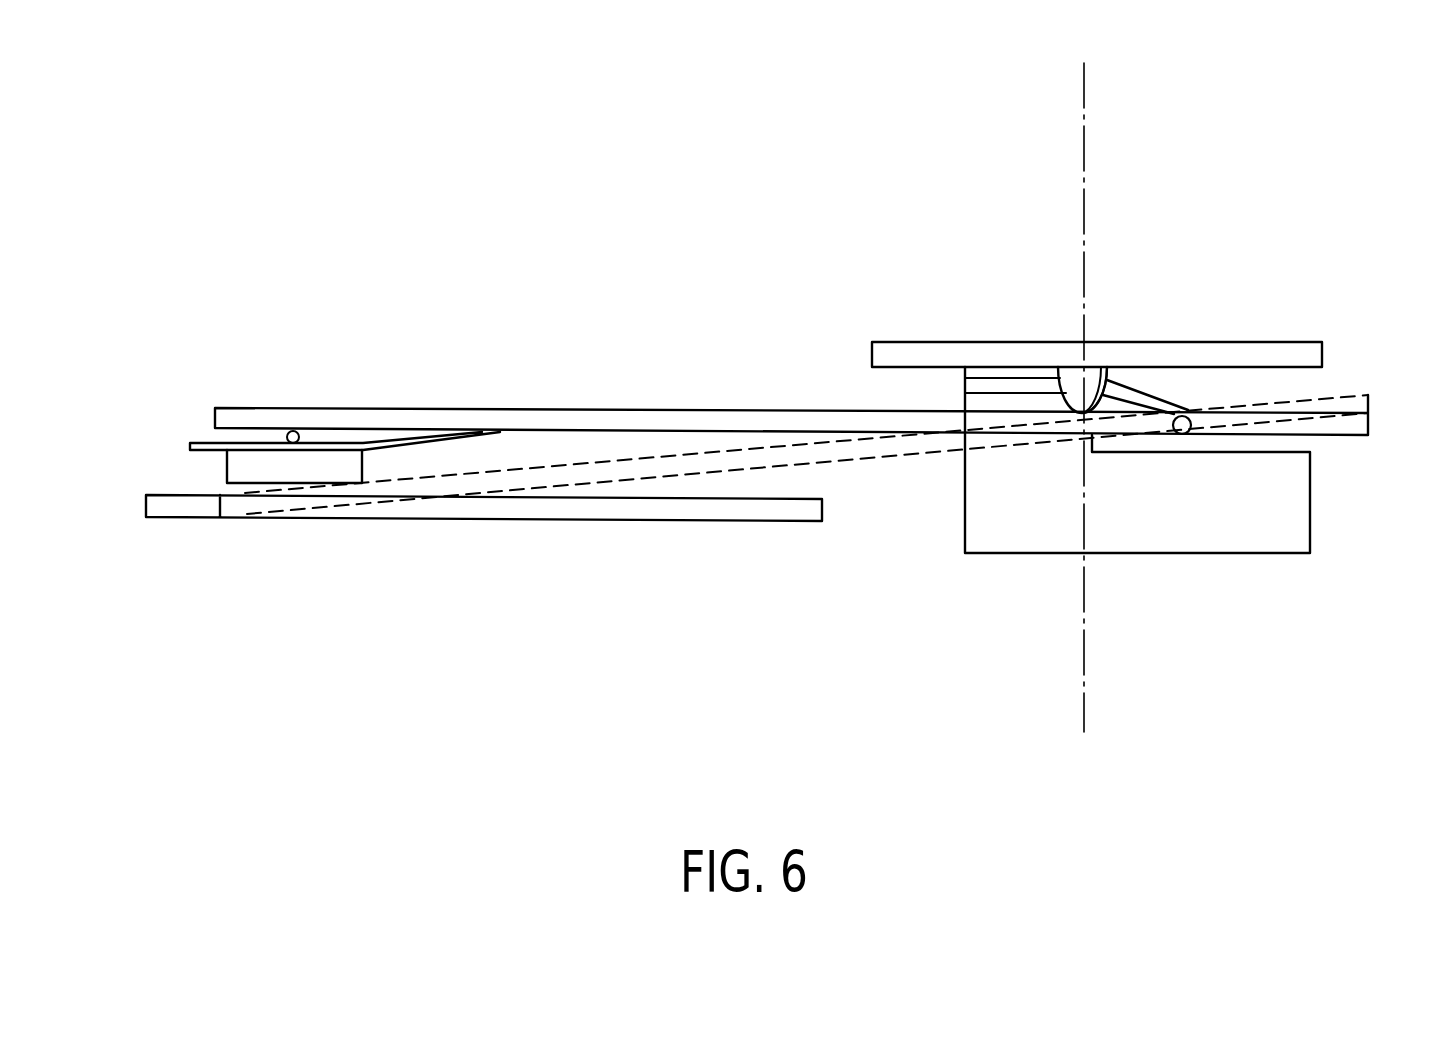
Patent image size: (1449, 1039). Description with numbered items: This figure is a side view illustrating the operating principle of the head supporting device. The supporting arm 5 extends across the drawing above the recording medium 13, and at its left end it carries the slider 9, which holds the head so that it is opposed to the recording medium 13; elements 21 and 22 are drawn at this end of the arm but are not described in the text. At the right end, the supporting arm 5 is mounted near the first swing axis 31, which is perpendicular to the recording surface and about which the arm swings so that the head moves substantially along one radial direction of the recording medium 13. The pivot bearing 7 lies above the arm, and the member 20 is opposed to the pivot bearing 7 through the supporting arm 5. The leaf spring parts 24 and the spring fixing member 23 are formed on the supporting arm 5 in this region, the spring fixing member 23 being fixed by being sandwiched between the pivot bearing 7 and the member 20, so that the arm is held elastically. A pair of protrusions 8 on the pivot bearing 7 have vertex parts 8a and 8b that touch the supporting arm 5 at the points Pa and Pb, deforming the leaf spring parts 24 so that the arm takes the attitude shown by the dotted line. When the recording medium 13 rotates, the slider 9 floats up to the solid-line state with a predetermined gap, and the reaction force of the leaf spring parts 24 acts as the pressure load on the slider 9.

The supporting arm 5 is at (469, 417).
The pivot bearing 7 is at (1255, 352).
The pair of protrusions 8 is at (1078, 400).
The vertex part 8a is at (1103, 372).
The vertex part 8b is at (1103, 372).
The slider 9 is at (235, 465).
The recording medium 13 is at (519, 518).
The member 20 is at (1292, 500).
The support plate 21 is at (206, 443).
The pivot shaft 22 is at (293, 430).
The spring fixing member 23 is at (1017, 373).
The leaf spring parts 24 is at (1155, 390).
The first swing axis 31 is at (1084, 96).
The contact point Pa is at (1082, 414).
The contact point Pb is at (1033, 600).